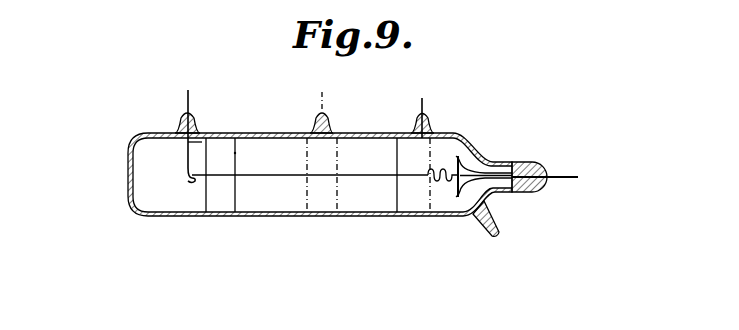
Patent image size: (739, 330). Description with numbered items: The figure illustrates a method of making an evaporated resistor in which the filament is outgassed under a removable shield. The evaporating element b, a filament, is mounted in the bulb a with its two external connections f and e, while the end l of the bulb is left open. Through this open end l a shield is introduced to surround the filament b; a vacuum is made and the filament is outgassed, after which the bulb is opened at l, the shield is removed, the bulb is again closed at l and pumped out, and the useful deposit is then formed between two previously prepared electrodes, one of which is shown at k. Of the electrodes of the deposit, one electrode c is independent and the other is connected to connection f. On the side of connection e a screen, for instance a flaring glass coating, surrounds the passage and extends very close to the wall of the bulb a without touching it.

The end of the bulb l is at (135, 197).
The electrode k is at (220, 203).
The external connection f is at (189, 91).
The electrode of the deposit c is at (423, 110).
The evaporating element b is at (370, 177).
The bulb a is at (446, 218).
The external connection e is at (568, 179).